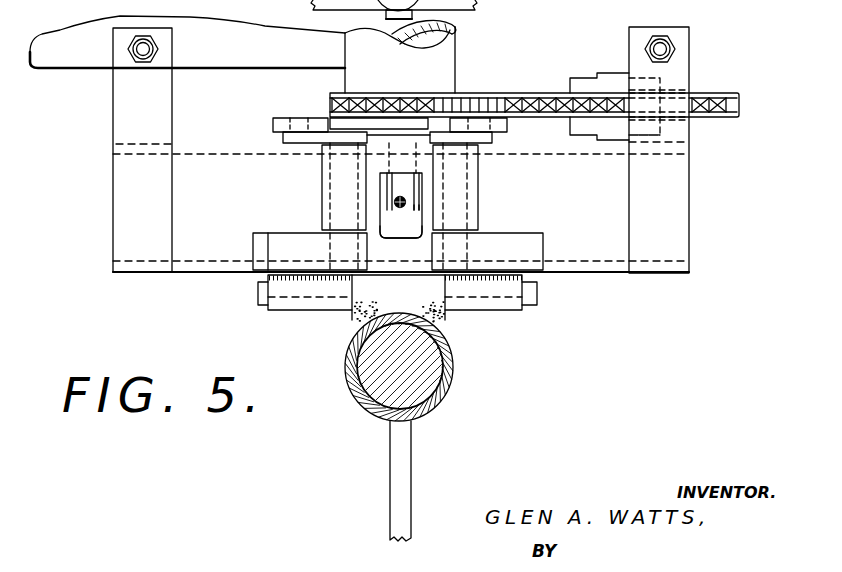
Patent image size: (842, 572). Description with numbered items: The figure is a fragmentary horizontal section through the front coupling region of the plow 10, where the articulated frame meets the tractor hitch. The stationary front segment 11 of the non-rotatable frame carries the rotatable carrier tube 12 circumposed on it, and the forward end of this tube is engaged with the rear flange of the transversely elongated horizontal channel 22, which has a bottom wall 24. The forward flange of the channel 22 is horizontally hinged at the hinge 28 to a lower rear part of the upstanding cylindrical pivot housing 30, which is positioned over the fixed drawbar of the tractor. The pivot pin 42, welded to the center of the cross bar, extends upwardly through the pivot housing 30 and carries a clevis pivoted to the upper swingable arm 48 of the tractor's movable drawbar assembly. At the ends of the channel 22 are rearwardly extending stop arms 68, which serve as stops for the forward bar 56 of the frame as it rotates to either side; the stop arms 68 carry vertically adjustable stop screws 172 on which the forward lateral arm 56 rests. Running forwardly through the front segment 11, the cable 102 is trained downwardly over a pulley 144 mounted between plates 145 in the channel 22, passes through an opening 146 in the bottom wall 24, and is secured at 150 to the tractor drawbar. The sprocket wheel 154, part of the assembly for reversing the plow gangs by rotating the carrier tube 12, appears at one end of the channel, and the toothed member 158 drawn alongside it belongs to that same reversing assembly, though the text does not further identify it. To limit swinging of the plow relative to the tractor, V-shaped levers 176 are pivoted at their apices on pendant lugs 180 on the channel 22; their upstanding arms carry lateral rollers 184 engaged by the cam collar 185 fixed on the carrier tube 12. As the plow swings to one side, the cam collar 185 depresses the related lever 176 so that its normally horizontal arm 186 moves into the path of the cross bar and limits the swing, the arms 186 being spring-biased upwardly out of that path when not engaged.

The plow 10 is at (429, 56).
The front segment 11 is at (462, 55).
The carrier tube 12 is at (456, 73).
The channel 22 is at (206, 276).
The bottom wall 24 is at (183, 231).
The hinge 28 is at (506, 305).
The pivot housing 30 is at (453, 391).
The pivot pin 42 is at (380, 386).
The upper swingable arm 48 is at (427, 481).
The forward bar 56 is at (76, 31).
The stop arms 68 is at (128, 98).
The cable 102 is at (399, 208).
The pulley 144 is at (403, 186).
The plates 145 is at (418, 208).
The opening 146 is at (413, 239).
The cable securement 150 is at (386, 14).
The sprocket wheel 154 is at (594, 88).
The rack bar 158 is at (538, 93).
The stop screws 172 is at (130, 50).
The V-shaped levers 176 is at (313, 144).
The pendant lugs 180 is at (297, 117).
The lateral rollers 184 is at (324, 213).
The cam collar 185 is at (385, 126).
The arms 186 is at (273, 262).